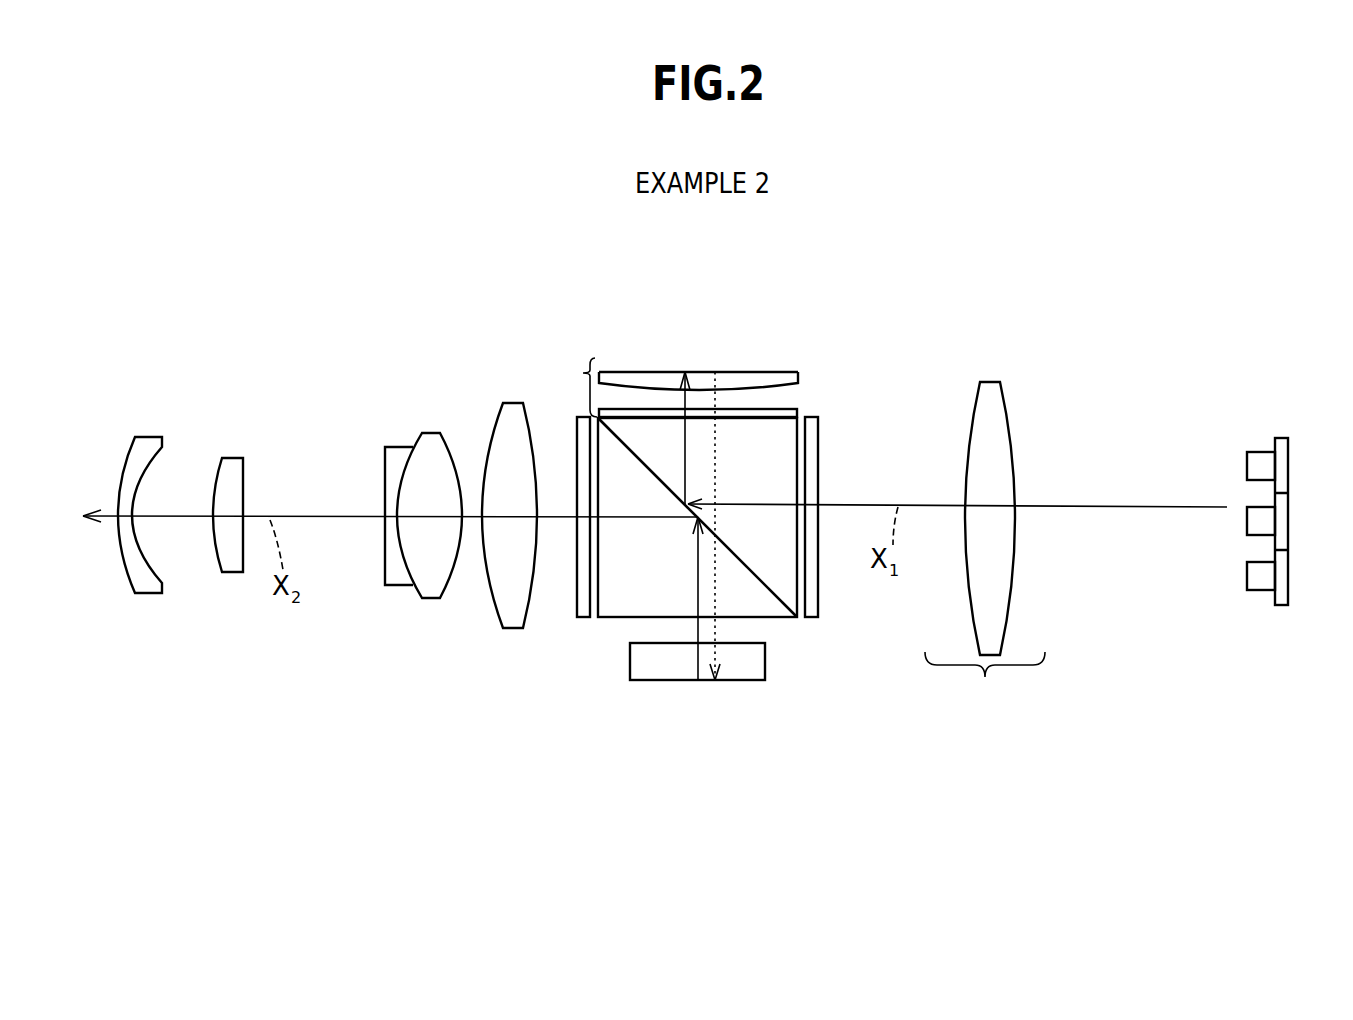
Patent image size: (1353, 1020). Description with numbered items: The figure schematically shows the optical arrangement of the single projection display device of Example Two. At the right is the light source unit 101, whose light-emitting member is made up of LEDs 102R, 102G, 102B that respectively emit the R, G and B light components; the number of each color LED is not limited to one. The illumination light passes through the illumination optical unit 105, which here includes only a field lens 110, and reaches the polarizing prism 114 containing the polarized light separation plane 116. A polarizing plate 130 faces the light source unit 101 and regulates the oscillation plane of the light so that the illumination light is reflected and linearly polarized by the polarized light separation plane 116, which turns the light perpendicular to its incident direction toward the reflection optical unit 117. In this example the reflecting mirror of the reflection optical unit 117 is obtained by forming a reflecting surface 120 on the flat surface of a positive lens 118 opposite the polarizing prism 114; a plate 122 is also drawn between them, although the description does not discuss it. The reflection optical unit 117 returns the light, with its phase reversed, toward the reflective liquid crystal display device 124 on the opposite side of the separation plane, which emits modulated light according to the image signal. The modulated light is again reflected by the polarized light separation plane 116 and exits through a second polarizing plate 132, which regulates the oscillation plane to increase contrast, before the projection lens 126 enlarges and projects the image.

The light source unit 101 is at (1222, 478).
The LED 102R is at (1255, 458).
The LED 102G is at (1252, 530).
The LED 102B is at (1265, 585).
The illumination optical unit 105 is at (985, 687).
The field lens 110 is at (985, 380).
The polarizing prism 114 is at (628, 605).
The polarized light separation plane 116 is at (770, 595).
The reflection optical unit 117 is at (558, 381).
The positive lens 118 is at (645, 379).
The reflecting surface 120 is at (742, 372).
The quarter wave plate 122 is at (793, 413).
The reflective liquid crystal display device 124 is at (645, 670).
The projection lens 126 is at (552, 393).
The polarizing plate 130 is at (812, 620).
The polarizing plate 132 is at (577, 607).